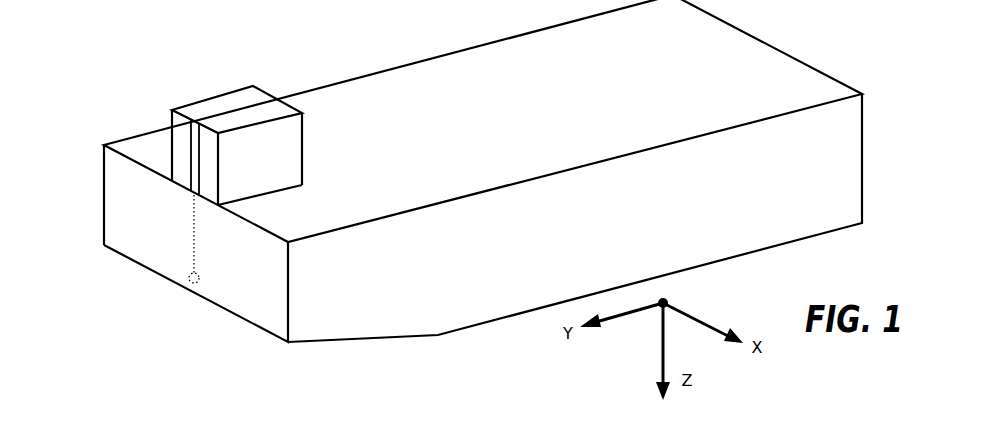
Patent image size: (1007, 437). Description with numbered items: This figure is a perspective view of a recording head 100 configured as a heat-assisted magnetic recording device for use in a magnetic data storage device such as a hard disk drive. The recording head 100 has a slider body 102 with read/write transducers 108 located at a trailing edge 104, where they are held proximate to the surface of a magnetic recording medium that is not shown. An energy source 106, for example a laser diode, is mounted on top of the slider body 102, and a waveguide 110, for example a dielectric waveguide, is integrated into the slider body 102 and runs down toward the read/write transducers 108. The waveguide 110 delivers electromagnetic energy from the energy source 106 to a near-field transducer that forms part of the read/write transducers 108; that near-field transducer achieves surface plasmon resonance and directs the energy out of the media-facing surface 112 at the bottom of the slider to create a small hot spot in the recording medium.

The recording head 100 is at (469, 206).
The slider body 102 is at (427, 72).
The trailing edge 104 is at (104, 220).
The energy source 106 is at (195, 108).
The read/write transducers 108 is at (192, 315).
The waveguide 110 is at (194, 233).
The media-facing surface 112 is at (278, 340).